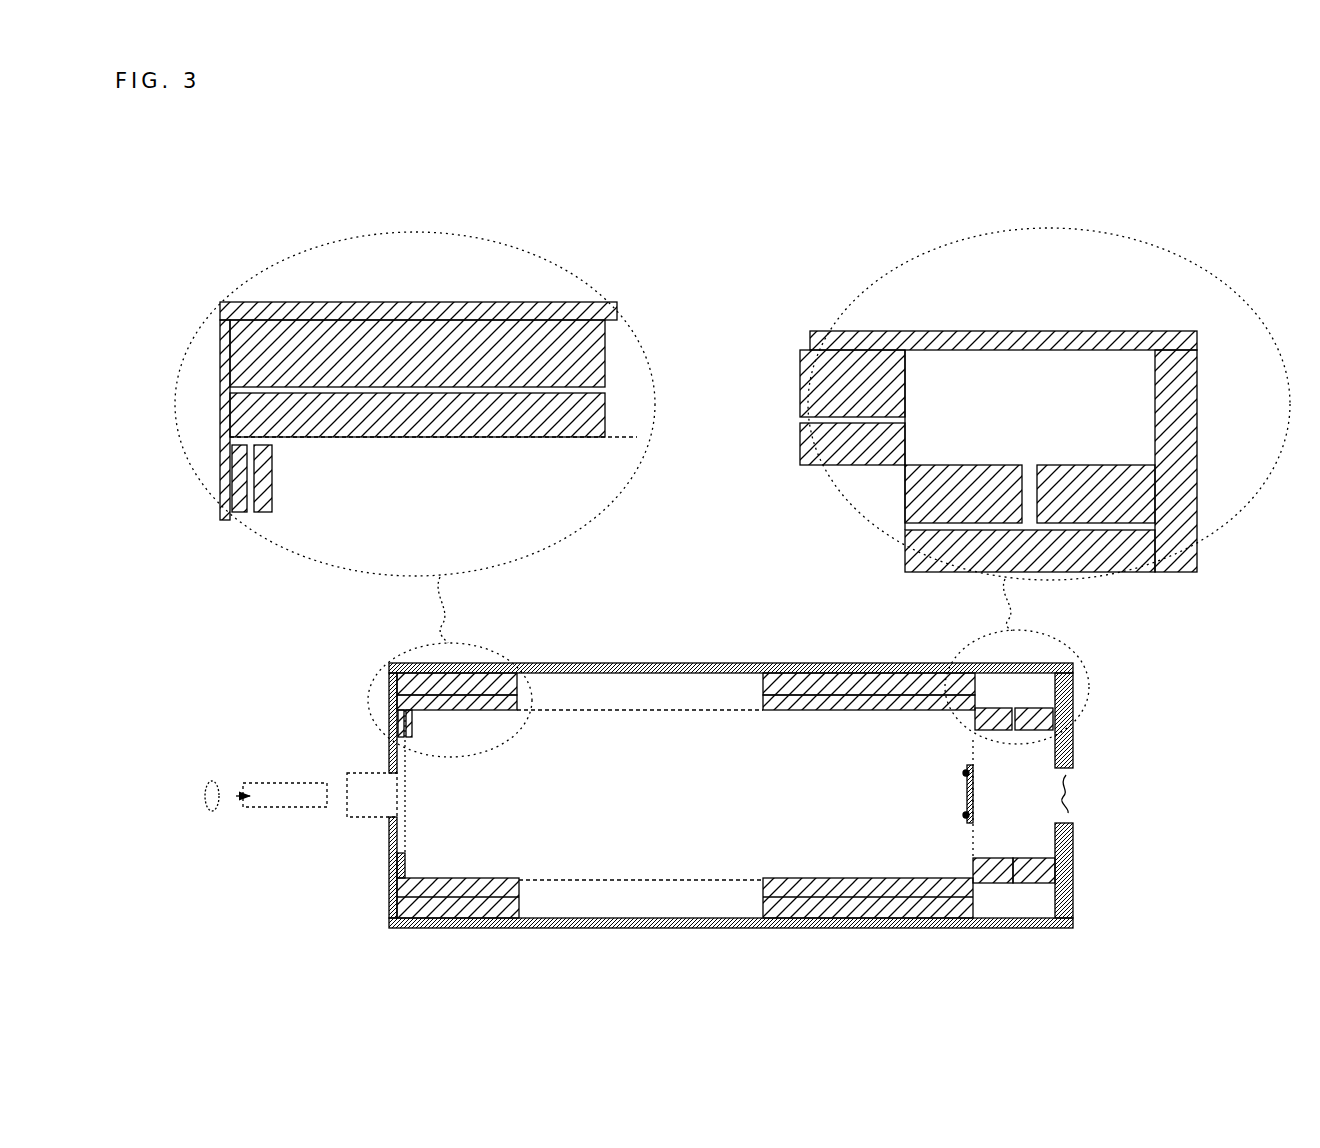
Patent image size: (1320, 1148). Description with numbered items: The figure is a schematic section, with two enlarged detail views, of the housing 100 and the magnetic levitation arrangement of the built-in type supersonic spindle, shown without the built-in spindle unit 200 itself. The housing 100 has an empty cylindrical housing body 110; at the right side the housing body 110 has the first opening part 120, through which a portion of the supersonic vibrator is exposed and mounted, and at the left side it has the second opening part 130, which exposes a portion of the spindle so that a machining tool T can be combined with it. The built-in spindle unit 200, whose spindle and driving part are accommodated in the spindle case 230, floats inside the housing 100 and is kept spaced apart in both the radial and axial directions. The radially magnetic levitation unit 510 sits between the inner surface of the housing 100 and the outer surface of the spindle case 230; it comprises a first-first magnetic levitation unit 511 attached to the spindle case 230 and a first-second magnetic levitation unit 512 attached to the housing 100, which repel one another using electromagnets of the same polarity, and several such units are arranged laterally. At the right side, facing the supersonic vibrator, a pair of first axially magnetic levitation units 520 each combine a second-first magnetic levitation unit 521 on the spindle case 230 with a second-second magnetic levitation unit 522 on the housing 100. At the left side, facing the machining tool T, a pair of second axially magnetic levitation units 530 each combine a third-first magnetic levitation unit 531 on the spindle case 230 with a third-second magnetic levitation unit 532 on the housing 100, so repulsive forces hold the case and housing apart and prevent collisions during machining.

The housing 100 is at (640, 658).
The housing body 110 is at (523, 300).
The first opening part 120 is at (1068, 795).
The second opening part 130 is at (390, 795).
The built-in spindle unit 200 is at (702, 808).
The spindle case 230 is at (688, 706).
The radially magnetic levitation unit 510 is at (567, 330).
The first-first magnetic levitation unit 511 is at (800, 437).
The first-second magnetic levitation unit 512 is at (800, 378).
The first axially magnetic levitation unit 520 is at (1030, 543).
The second-first magnetic levitation unit 521 is at (962, 465).
The second-second magnetic levitation unit 522 is at (1112, 472).
The second axially magnetic levitation unit 530 is at (208, 335).
The third-first magnetic levitation unit 531 is at (272, 530).
The third-second magnetic levitation unit 532 is at (222, 447).
The machining tool T is at (297, 810).